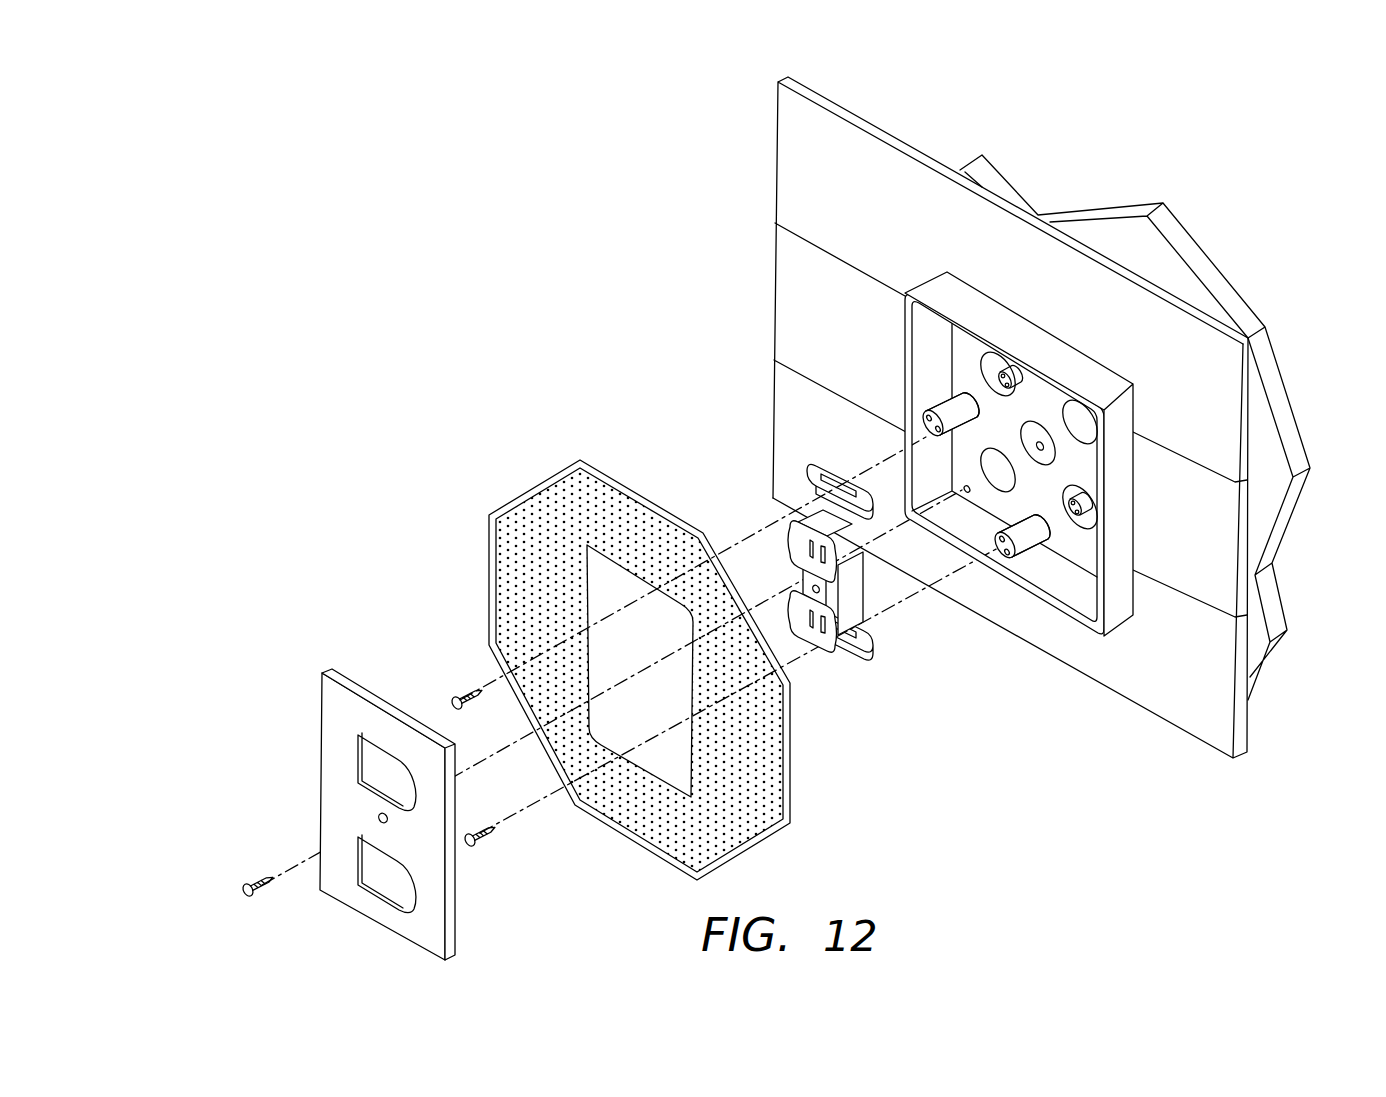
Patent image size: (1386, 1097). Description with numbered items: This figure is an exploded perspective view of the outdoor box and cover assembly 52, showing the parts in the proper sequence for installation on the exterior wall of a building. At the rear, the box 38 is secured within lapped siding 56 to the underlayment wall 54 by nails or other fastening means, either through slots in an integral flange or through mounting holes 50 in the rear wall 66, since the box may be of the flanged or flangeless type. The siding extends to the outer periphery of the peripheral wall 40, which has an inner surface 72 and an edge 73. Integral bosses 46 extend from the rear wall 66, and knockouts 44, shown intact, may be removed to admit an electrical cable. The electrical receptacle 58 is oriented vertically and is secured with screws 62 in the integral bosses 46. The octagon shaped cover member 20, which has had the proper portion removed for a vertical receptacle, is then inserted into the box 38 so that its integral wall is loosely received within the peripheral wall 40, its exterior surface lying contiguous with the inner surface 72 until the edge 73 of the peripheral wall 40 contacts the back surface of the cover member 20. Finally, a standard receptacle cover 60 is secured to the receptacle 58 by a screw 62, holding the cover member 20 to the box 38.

The cover member 20 is at (836, 801).
The box 38 is at (1150, 403).
The peripheral wall 40 is at (957, 322).
The knockouts 44 is at (1080, 448).
The integral bosses 46 is at (1093, 510).
The mounting holes 50 is at (962, 488).
The outdoor box and cover assembly 52 is at (537, 310).
The underlayment wall 54 is at (1283, 463).
The lapped siding 56 is at (1212, 715).
The electrical receptacle 58 is at (848, 608).
The receptacle cover 60 is at (403, 925).
The screws 62 is at (452, 692).
The rear wall 66 is at (1087, 560).
The inner surface 72 is at (947, 382).
The edge 73 is at (1072, 613).